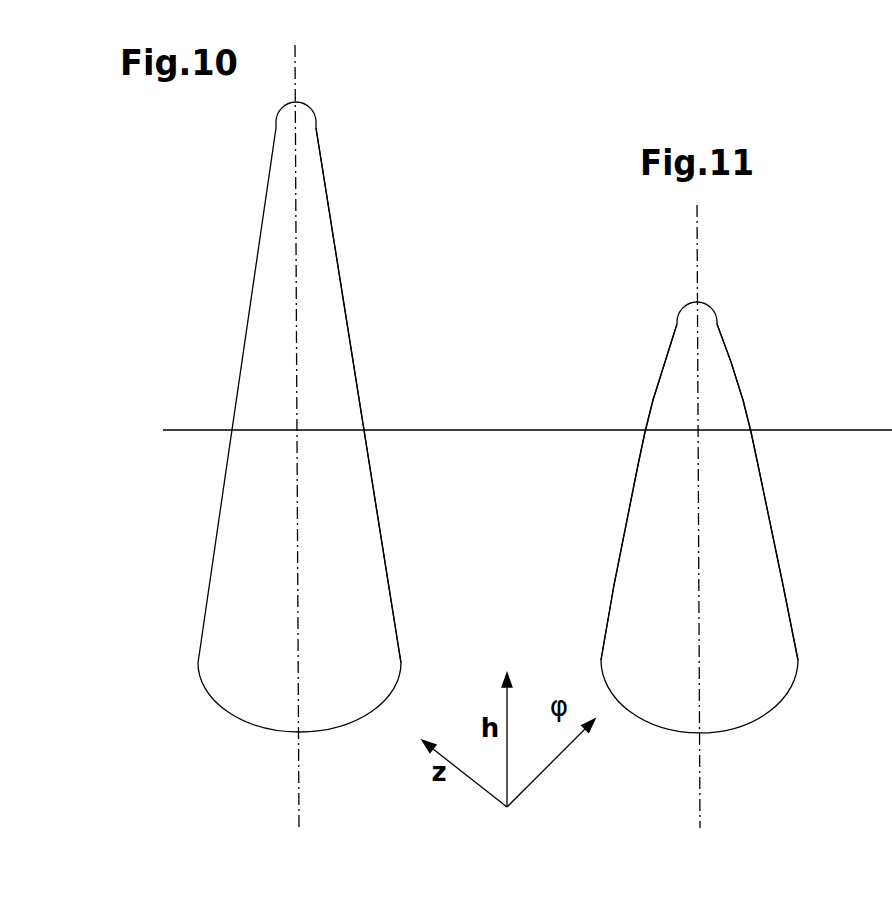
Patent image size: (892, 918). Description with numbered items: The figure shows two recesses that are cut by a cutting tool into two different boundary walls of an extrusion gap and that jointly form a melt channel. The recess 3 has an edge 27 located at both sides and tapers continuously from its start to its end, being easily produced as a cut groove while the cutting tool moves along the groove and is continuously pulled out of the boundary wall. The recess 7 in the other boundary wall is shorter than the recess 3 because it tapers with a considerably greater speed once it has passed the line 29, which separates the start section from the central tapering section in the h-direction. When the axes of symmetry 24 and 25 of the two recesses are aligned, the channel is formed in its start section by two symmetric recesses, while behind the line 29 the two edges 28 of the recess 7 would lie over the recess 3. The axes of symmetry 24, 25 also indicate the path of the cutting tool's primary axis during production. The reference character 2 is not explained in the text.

In FIG. 11, the device 2 is at (884, 681).
In FIG. 10, the recess 3 is at (334, 356).
In FIG. 11, the recess 7 is at (762, 524).
In FIG. 10, the axis of symmetry 24 is at (303, 773).
In FIG. 11, the axis of symmetry 25 is at (717, 516).
In FIG. 10, the edge 27 is at (373, 483).
In FIG. 11, the edge 28 is at (630, 484).
In FIG. 10, the line 29 is at (508, 434).